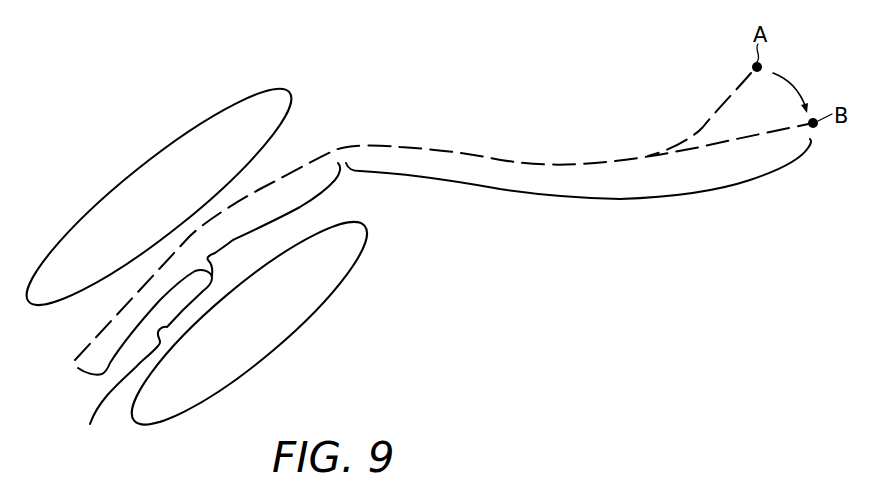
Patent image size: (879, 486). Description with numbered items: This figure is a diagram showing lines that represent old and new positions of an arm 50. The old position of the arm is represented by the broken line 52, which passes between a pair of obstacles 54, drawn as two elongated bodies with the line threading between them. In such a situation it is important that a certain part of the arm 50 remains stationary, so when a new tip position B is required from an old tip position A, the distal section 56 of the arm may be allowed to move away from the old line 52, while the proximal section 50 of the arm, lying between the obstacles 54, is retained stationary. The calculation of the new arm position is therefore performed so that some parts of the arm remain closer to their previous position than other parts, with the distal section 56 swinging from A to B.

The arm 50 is at (206, 309).
The broken line 52 is at (455, 150).
The obstacles 54 is at (212, 119).
The distal section 56 is at (560, 196).